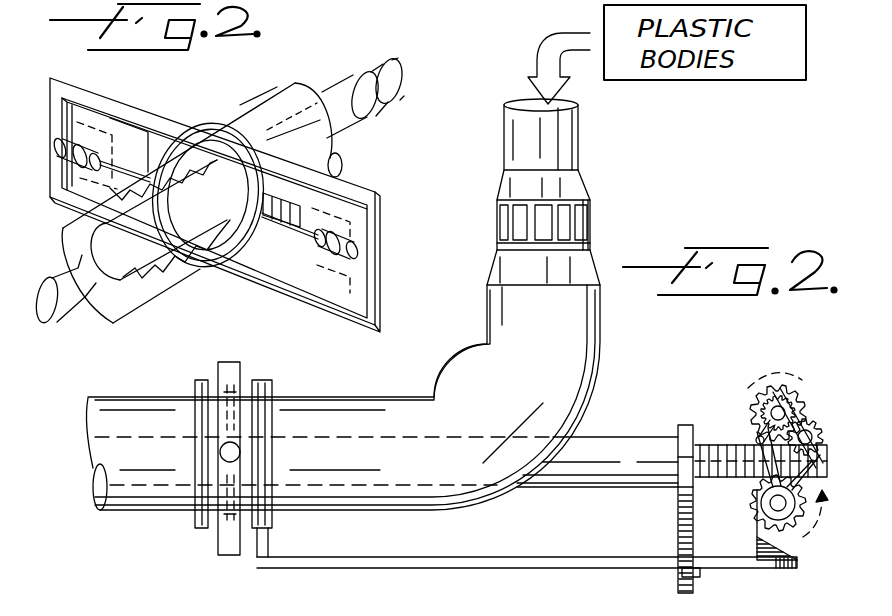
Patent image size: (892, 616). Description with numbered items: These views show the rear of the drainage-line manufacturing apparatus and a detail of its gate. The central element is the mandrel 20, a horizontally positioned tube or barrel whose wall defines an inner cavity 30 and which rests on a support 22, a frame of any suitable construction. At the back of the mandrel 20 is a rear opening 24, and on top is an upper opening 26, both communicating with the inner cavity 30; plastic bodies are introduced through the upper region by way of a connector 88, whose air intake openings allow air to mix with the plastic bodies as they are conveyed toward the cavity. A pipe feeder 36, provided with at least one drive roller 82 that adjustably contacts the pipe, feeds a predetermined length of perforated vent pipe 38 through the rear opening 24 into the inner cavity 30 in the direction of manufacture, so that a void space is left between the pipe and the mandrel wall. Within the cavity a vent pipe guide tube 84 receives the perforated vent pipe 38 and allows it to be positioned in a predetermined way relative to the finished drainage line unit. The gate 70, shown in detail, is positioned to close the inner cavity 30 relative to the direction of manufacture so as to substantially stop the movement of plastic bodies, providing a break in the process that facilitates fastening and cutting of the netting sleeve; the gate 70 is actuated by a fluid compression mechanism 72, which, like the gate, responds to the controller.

In FIG. 3, the mandrel 20 is at (173, 287).
In FIG. 2, the mandrel 20 is at (376, 329).
In FIG. 2, the support 22 is at (448, 537).
In FIG. 2, the rear opening 24 is at (704, 429).
In FIG. 2, the upper opening 26 is at (566, 101).
In FIG. 3, the inner cavity 30 is at (86, 238).
In FIG. 2, the inner cavity 30 is at (86, 484).
In FIG. 2, the pipe feeder 36 is at (810, 399).
In FIG. 3, the perforated vent pipe 38 is at (68, 305).
In FIG. 2, the perforated vent pipe 38 is at (742, 477).
In FIG. 3, the gate 70 is at (358, 170).
In FIG. 2, the gate 70 is at (213, 535).
In FIG. 3, the fluid compression mechanism 72 is at (343, 250).
In FIG. 2, the drive roller 82 is at (750, 398).
In FIG. 3, the vent pipe guide tube 84 is at (82, 292).
In FIG. 2, the vent pipe guide tube 84 is at (648, 407).
In FIG. 2, the connector 88 is at (655, 180).